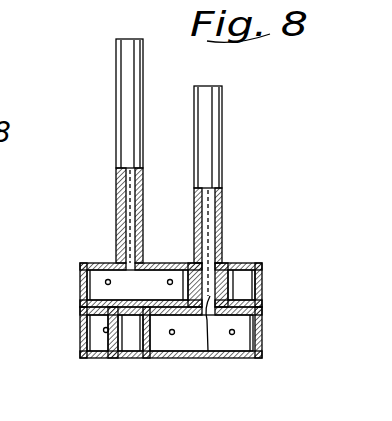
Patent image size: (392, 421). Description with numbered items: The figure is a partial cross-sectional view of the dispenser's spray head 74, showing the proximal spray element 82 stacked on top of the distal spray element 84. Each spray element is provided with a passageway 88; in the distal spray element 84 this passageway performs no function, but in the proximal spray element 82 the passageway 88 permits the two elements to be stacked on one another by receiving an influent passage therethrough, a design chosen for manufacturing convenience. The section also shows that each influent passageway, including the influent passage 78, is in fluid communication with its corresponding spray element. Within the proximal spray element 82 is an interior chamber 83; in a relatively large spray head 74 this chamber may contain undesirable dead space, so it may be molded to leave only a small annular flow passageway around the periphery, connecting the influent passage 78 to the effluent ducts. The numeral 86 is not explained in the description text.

The spray head 74 is at (245, 210).
The influent passage 78 is at (117, 192).
The proximal spray element 82 is at (148, 279).
The interior chamber 83 is at (158, 272).
The distal spray element 84 is at (147, 349).
The wall 86 is at (97, 265).
The passageway 88 is at (208, 357).